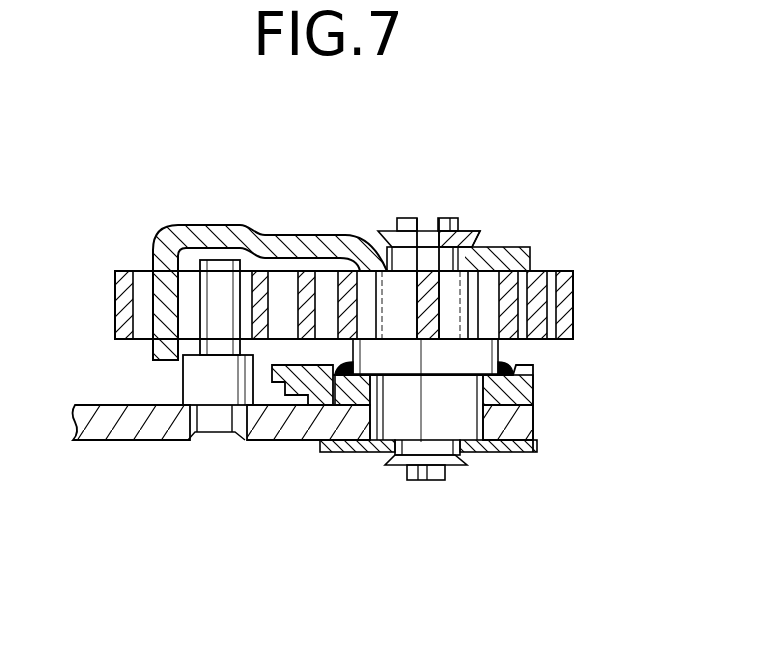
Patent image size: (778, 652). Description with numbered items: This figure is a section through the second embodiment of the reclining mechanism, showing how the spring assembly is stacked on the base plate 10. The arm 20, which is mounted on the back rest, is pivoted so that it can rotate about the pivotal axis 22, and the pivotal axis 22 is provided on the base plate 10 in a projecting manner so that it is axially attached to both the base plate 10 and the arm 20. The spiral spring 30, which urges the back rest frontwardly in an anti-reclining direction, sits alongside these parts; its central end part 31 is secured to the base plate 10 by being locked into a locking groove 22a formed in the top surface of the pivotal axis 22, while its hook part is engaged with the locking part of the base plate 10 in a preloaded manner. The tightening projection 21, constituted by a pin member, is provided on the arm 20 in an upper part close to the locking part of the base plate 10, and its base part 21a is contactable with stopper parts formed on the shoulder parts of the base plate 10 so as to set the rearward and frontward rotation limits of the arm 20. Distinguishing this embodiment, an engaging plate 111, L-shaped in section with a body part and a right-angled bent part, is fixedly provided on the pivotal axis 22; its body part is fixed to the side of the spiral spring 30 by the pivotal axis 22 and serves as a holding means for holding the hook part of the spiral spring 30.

The base plate 10 is at (522, 388).
The arm 20 is at (122, 425).
The tightening projection 21 is at (217, 283).
The base part 21a is at (193, 383).
The pivotal axis 22 is at (386, 422).
The locking groove 22a is at (424, 380).
The spiral spring 30 is at (565, 303).
The central end part 31 is at (425, 268).
The engaging plate 111 is at (301, 234).